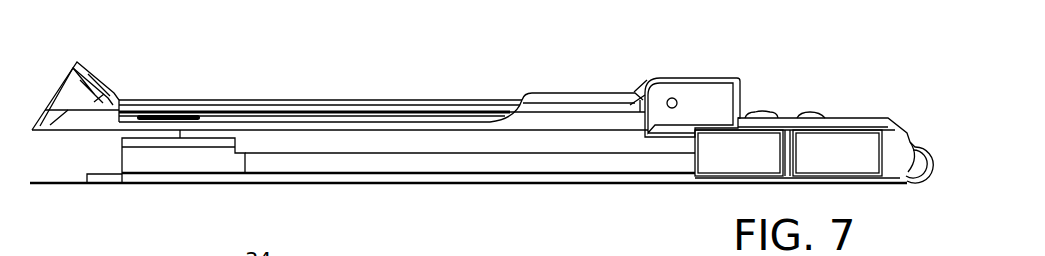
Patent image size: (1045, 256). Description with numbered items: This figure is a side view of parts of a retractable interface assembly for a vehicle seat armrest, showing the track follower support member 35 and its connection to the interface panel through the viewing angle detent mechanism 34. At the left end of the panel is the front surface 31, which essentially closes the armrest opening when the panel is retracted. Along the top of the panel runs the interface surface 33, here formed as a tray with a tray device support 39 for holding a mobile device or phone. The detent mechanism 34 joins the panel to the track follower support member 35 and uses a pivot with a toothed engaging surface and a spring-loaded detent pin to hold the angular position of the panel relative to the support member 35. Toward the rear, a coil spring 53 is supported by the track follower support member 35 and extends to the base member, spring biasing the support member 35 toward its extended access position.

The front surface 31 is at (57, 97).
The interface surface 33 is at (420, 105).
The viewing angle detent mechanism 34 is at (717, 78).
The track follower support member 35 is at (820, 128).
The tray device support 39 is at (578, 100).
The coil spring 53 is at (920, 147).